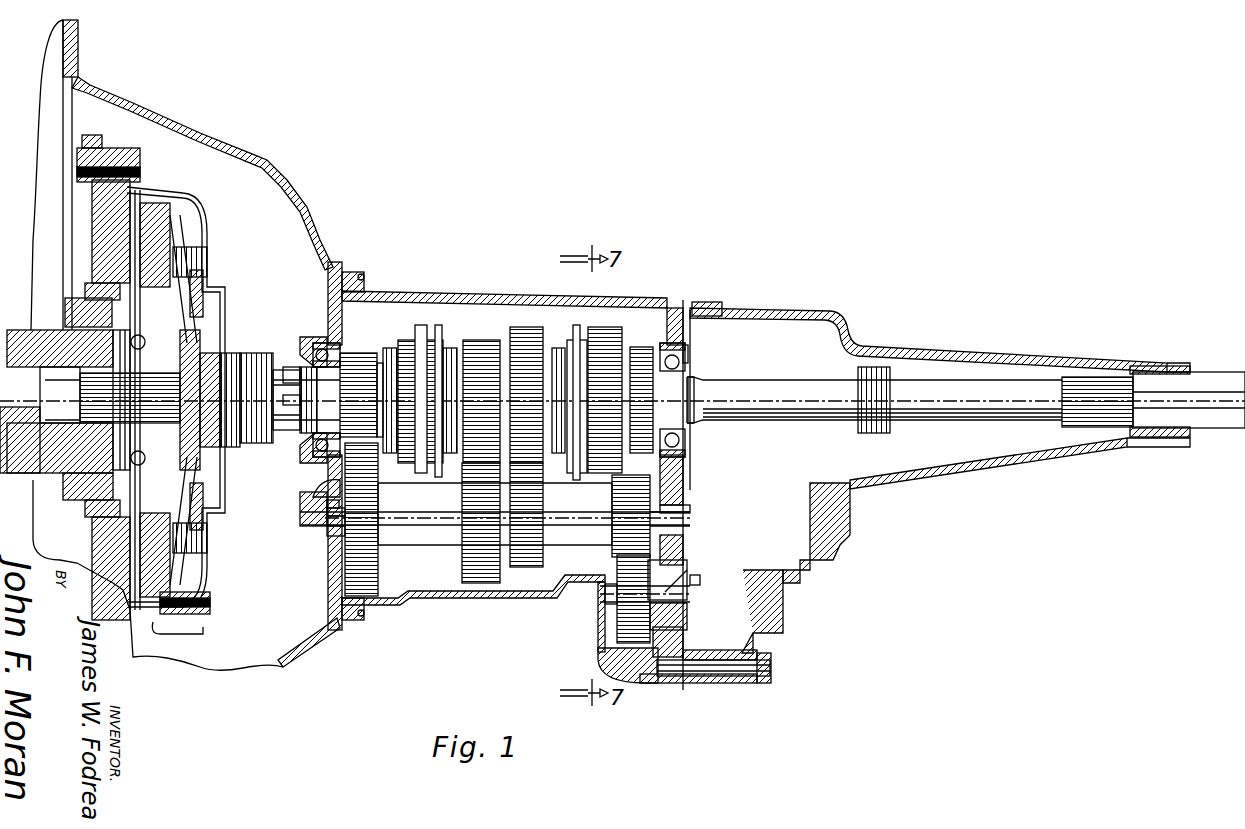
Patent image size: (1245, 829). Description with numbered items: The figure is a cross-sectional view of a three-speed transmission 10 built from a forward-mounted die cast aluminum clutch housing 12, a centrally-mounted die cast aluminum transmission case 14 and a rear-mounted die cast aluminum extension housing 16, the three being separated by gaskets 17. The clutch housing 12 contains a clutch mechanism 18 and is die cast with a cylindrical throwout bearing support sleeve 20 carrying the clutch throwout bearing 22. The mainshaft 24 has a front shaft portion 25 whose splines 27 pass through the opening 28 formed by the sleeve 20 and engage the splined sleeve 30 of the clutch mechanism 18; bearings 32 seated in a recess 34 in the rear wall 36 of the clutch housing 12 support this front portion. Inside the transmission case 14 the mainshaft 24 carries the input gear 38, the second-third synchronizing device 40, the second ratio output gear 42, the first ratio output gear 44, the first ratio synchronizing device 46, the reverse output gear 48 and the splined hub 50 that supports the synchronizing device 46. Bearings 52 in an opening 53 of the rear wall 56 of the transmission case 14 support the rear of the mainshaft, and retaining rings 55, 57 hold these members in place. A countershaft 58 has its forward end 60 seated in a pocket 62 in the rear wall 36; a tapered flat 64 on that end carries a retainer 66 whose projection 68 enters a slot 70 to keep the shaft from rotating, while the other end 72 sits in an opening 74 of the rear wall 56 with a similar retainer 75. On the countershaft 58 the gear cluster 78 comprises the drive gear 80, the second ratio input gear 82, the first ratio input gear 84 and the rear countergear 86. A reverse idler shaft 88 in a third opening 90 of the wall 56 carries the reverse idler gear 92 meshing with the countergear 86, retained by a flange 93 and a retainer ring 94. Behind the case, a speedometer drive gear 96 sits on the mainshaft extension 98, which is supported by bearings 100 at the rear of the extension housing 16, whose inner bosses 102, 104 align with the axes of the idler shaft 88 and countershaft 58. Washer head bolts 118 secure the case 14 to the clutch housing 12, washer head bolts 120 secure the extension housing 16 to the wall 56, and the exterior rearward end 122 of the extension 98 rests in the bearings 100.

The three-speed transmission 10 is at (32, 103).
The clutch housing 12 is at (215, 150).
The transmission case 14 is at (482, 300).
The extension housing 16 is at (867, 352).
The gaskets 17 is at (343, 270).
The clutch mechanism 18 is at (219, 212).
The throwout bearing support sleeve 20 is at (290, 372).
The clutch throwout bearing 22 is at (248, 378).
The mainshaft 24 is at (322, 387).
The front shaft portion 25 is at (305, 408).
The splines 27 is at (152, 392).
The opening 28 is at (308, 412).
The splined sleeve 30 is at (132, 440).
The bearings 32 is at (320, 348).
The recess 34 is at (350, 340).
The rear wall 36 is at (330, 300).
The input gear 38 is at (360, 360).
The second-third synchronizing device 40 is at (420, 340).
The second ratio output gear 42 is at (480, 344).
The first ratio output gear 44 is at (530, 330).
The first ratio synchronizing device 46 is at (577, 480).
The reverse output gear 48 is at (600, 328).
The splined hub 50 is at (638, 350).
The bearings 52 is at (688, 365).
The opening 53 is at (688, 444).
The retaining ring 55 is at (683, 349).
The rear wall 56 is at (680, 482).
The retaining ring 57 is at (697, 380).
The countershaft 58 is at (310, 537).
The forward end 60 is at (325, 527).
The pocket or opening 62 is at (318, 520).
The tapered flat 64 is at (305, 510).
The retainer 66 is at (333, 550).
The projection 68 is at (318, 504).
The recess or slot 70 is at (322, 492).
The other end 72 is at (683, 522).
The opening 74 is at (683, 507).
The retainer 75 is at (686, 574).
The gear cluster 78 is at (427, 553).
The drive gear 80 is at (360, 553).
The second ratio input gear 82 is at (483, 590).
The first ratio input gear 84 is at (527, 582).
The rear countergear 86 is at (617, 545).
The reverse idler shaft 88 is at (687, 570).
The third opening 90 is at (687, 614).
The reverse idler gear 92 is at (622, 626).
The flange 93 is at (700, 582).
The retainer ring 94 is at (612, 614).
The speedometer drive gear 96 is at (885, 420).
The extension 98 is at (830, 400).
The bearings 100 is at (1190, 370).
The boss 102 is at (745, 602).
The boss 104 is at (812, 515).
The washer head bolts 118 is at (364, 282).
The washer head bolts 120 is at (712, 306).
The exterior rearward end 122 is at (1215, 412).